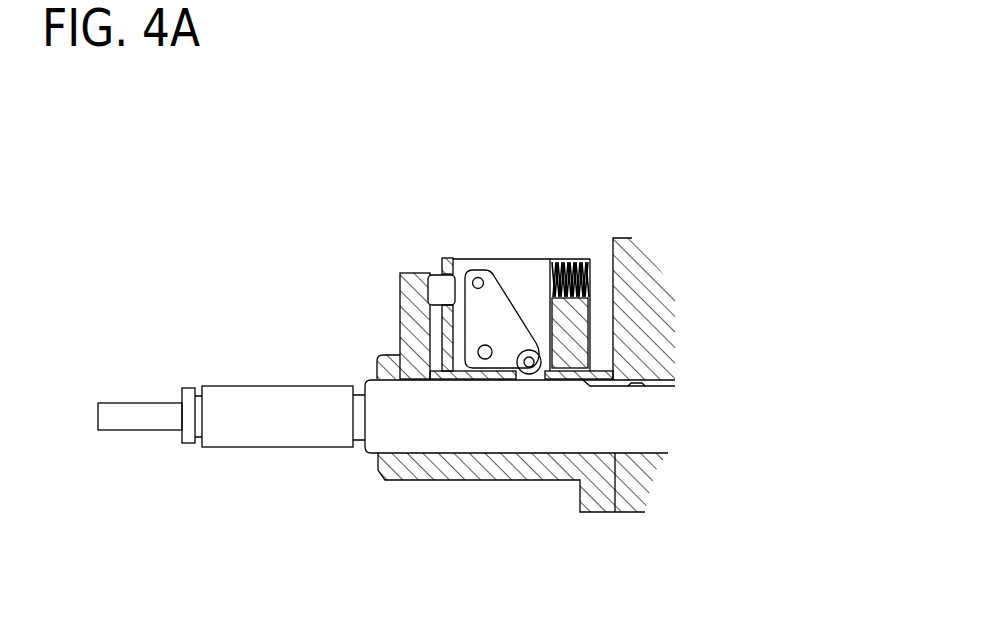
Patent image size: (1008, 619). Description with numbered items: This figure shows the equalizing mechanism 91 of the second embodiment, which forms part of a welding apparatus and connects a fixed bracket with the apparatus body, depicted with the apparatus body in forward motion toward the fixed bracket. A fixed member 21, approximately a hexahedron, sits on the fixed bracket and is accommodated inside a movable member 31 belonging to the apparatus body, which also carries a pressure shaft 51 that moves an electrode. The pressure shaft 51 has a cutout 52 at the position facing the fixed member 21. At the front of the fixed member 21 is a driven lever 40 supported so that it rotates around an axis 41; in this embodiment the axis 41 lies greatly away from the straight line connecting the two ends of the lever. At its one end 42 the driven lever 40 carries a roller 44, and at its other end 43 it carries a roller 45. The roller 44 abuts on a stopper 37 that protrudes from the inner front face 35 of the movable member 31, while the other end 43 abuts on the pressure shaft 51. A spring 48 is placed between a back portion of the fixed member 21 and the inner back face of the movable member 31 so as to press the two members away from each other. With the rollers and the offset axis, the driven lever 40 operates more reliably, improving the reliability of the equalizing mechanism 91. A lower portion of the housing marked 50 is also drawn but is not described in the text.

The equalizing mechanism 91 is at (738, 244).
The fixed member 21 is at (447, 273).
The movable member 31 is at (622, 241).
The inner front face 35 is at (483, 318).
The stopper 37 is at (437, 278).
The driven lever 40 is at (379, 284).
The axis 41 is at (400, 345).
The one end 42 is at (527, 298).
The other end 43 is at (524, 378).
The roller 44 is at (480, 274).
The roller 45 is at (535, 378).
The spring 48 is at (595, 265).
The lower housing 50 is at (630, 487).
The pressure shaft 51 is at (462, 430).
The cutout 52 is at (641, 388).